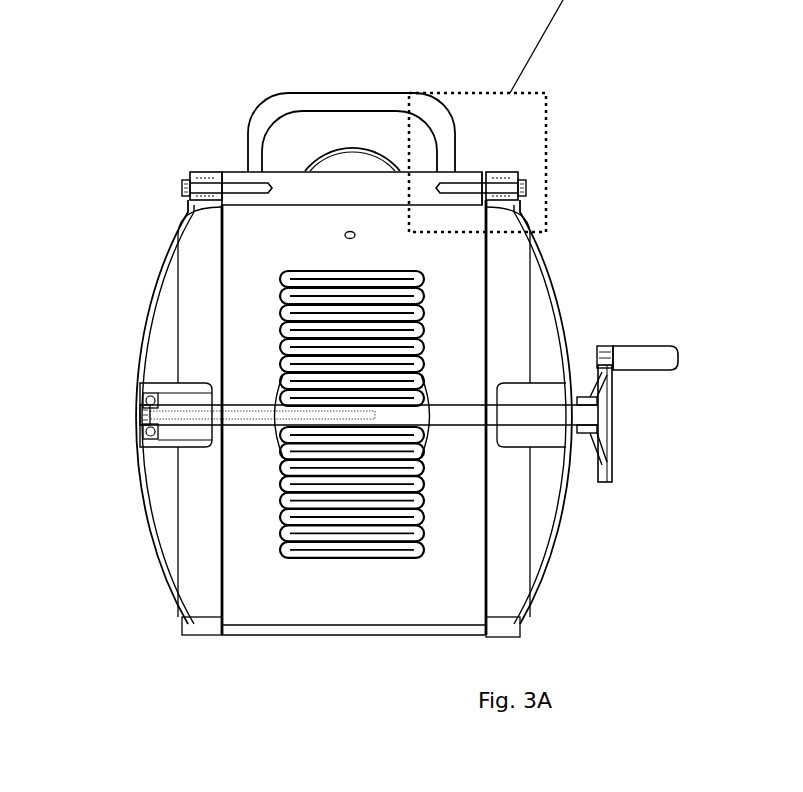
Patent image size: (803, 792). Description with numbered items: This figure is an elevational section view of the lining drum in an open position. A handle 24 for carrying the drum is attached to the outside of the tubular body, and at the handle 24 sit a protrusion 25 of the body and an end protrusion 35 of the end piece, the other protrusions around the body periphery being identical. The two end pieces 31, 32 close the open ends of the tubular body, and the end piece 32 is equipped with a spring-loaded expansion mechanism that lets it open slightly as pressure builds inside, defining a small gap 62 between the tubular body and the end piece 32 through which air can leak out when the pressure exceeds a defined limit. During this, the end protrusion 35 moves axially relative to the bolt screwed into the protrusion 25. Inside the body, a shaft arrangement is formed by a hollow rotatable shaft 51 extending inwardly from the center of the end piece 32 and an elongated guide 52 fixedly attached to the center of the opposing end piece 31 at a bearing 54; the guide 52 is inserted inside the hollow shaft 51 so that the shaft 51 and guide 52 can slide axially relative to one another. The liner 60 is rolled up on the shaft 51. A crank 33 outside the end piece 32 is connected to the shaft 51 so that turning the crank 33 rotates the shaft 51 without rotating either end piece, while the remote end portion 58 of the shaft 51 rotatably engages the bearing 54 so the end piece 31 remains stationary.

The handle 24 is at (357, 103).
The protrusion 25 is at (300, 187).
The end piece 31 is at (143, 318).
The end piece 32 is at (550, 293).
The crank 33 is at (622, 348).
The end protrusion 35 is at (212, 172).
The rotatable shaft 51 is at (447, 412).
The elongated guide 52 is at (147, 430).
The bearing 54 is at (147, 400).
The remote end portion 58 is at (155, 412).
The liner 60 is at (283, 278).
The gap 62 is at (482, 172).